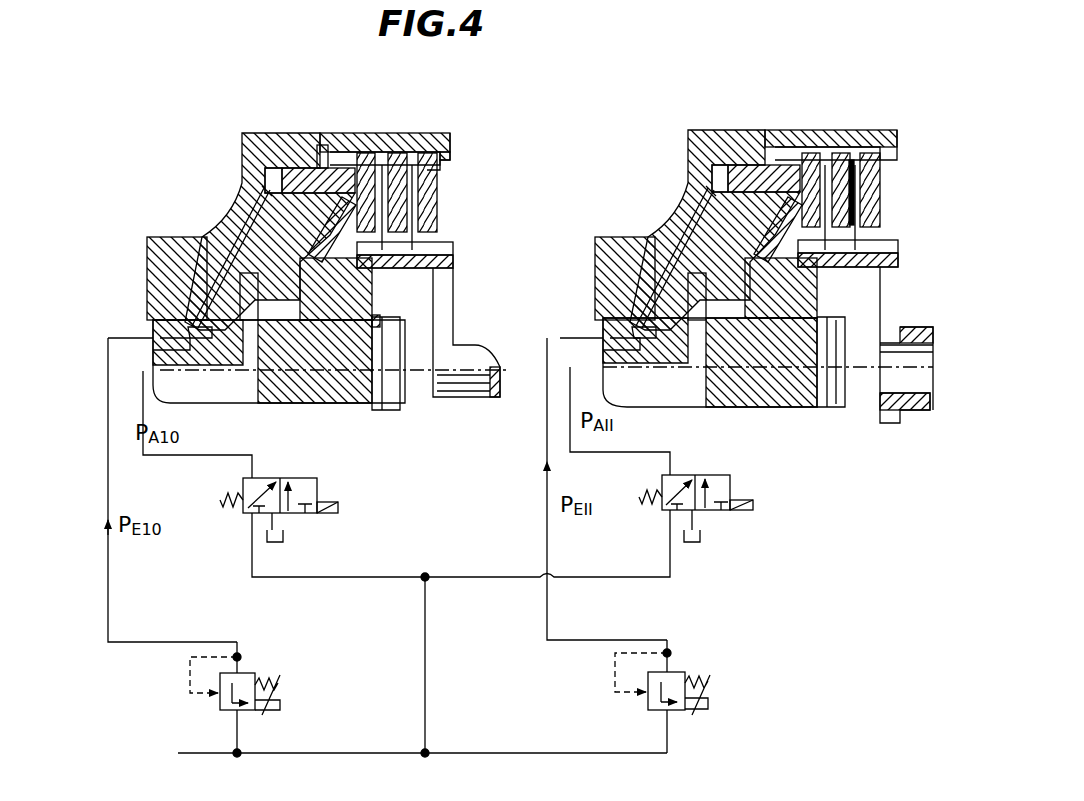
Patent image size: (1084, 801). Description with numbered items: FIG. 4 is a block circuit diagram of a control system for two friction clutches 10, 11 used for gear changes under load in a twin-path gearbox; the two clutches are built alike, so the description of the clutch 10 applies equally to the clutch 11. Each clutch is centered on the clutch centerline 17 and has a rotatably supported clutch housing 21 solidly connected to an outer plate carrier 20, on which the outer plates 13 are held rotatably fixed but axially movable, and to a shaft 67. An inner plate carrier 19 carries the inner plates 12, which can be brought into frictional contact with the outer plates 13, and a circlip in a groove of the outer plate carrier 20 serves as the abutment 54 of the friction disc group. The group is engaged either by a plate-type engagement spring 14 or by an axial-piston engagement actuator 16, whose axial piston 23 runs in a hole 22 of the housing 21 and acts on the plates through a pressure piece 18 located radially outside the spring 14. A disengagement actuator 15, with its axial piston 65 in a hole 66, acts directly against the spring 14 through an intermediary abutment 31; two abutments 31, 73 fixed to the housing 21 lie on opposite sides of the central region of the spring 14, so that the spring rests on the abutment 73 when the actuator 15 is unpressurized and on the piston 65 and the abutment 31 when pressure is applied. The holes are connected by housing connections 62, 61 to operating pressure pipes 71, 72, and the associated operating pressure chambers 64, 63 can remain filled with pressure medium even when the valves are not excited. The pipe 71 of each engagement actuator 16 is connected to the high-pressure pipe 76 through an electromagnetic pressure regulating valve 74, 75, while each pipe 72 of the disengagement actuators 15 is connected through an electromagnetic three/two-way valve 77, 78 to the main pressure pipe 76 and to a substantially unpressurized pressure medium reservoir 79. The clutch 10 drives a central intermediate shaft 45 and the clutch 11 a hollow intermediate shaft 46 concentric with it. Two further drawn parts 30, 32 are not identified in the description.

The friction clutch 10 is at (460, 187).
The friction clutch 11 is at (890, 215).
The inner plates 12 is at (433, 210).
The outer plates 13 is at (427, 160).
The engagement spring 14 is at (355, 365).
The disengagement actuator 15 is at (312, 385).
The engagement actuator 16 is at (283, 163).
The clutch centerline 17 is at (172, 387).
The pressure piece 18 is at (345, 185).
The inner plate carrier 19 is at (428, 257).
The outer plate carrier 20 is at (380, 140).
The clutch housing 21 is at (240, 150).
The hole 22 is at (262, 192).
The axial piston 23 is at (324, 160).
The bearing surface 30 is at (350, 250).
The abutment 31 is at (372, 287).
The hub 32 is at (303, 305).
The central intermediate shaft 45 is at (468, 350).
The hollow intermediate shaft 46 is at (905, 330).
The abutment 54 is at (440, 145).
The housing connection 61 is at (272, 383).
The housing connection 62 is at (183, 237).
The operating pressure chamber 63 is at (247, 305).
The operating pressure chamber 64 is at (275, 150).
The axial piston 65 is at (278, 312).
The hole 66 is at (212, 262).
The shaft 67 is at (226, 397).
The operating pressure pipe 71 is at (112, 548).
The operating pressure pipe 72 is at (190, 458).
The abutment 73 is at (395, 380).
The electromagnetic pressure regulating valve 74 is at (247, 663).
The electromagnetic pressure regulating valve 75 is at (672, 662).
The high-pressure pipe 76 is at (374, 760).
The electromagnetic 3/2-way valve 77 is at (320, 493).
The electromagnetic 3/2-way valve 78 is at (737, 490).
The pressure medium reservoir 79 is at (290, 532).